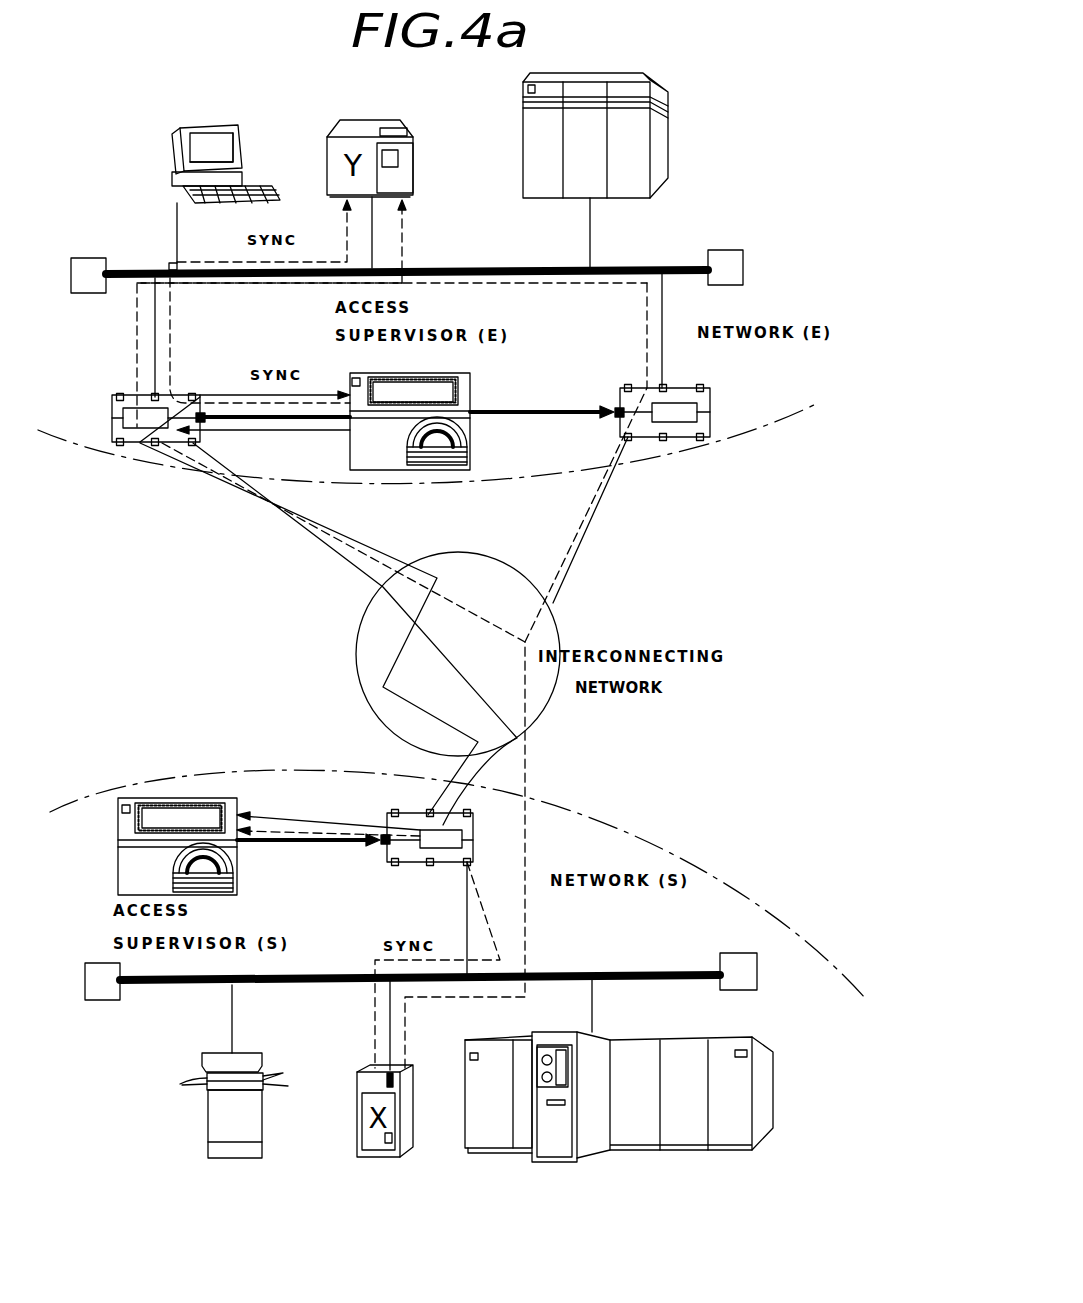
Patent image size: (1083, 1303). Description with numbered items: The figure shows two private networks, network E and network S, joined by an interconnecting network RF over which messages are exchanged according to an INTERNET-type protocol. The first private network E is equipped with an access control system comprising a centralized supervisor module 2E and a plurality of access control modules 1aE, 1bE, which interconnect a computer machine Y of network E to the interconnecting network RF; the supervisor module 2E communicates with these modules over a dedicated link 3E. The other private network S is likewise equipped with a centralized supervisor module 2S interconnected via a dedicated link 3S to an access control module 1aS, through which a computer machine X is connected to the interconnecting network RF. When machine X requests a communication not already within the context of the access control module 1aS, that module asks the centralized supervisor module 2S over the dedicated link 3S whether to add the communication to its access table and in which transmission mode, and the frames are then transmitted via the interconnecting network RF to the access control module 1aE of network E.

The access control module 1aE is at (112, 400).
The access control module 1bE is at (703, 400).
The centralized supervisor module 2E is at (468, 378).
The dedicated link 3E is at (253, 420).
The access control module 1aS is at (422, 863).
The centralized supervisor module 2S is at (130, 863).
The dedicated link 3S is at (343, 841).
The interconnecting network RF is at (375, 637).